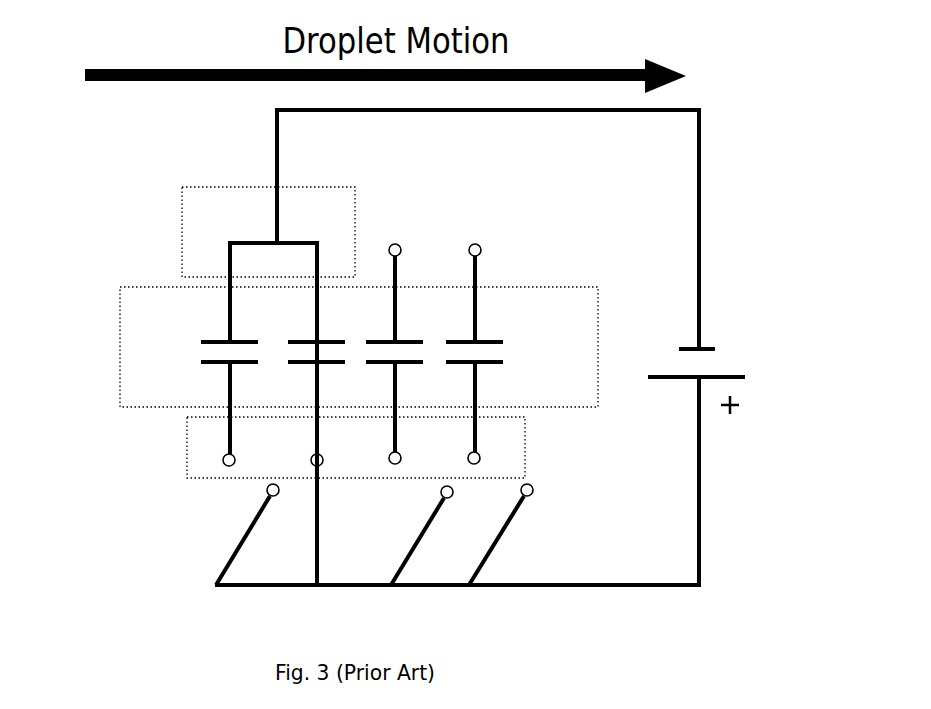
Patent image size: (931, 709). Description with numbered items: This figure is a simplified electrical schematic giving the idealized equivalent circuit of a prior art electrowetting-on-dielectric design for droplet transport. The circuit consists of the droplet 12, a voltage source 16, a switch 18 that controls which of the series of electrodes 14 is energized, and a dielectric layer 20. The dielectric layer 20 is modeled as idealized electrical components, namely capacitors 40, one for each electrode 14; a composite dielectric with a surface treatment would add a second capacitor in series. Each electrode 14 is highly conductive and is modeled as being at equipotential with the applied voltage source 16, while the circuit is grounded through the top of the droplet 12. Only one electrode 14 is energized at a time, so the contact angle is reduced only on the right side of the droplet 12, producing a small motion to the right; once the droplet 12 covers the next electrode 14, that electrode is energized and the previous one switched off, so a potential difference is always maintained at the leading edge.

The droplet 12 is at (200, 196).
The electrode 14 is at (200, 436).
The voltage source 16 is at (745, 355).
The switch 18 is at (200, 539).
The dielectric layer 20 is at (132, 323).
The capacitors 40 is at (254, 341).